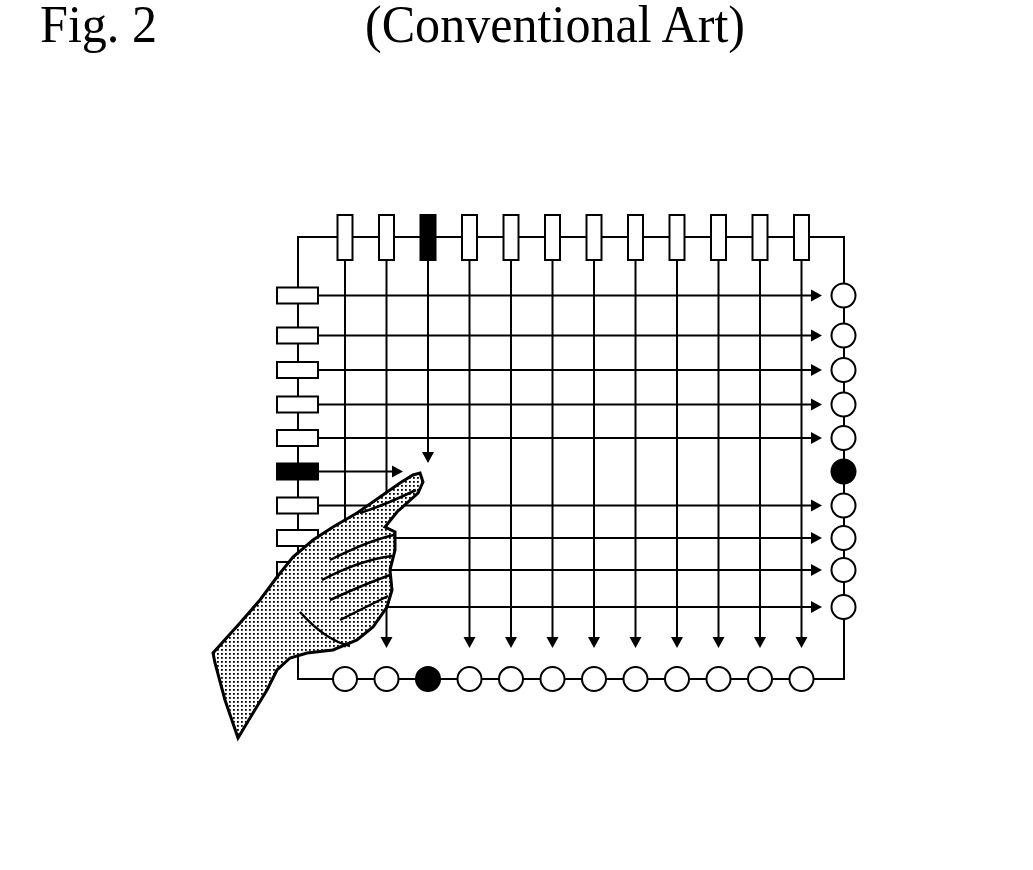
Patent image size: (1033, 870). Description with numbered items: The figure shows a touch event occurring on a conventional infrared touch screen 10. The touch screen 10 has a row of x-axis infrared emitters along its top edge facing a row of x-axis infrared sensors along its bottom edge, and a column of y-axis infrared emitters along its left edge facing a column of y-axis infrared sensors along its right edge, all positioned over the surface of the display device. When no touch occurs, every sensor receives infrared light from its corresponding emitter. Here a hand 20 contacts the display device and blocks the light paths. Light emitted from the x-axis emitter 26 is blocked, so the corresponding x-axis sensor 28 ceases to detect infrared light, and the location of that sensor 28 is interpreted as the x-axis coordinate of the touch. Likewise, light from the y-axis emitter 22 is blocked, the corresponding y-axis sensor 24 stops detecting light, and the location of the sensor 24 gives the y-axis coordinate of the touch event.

The infrared touch screen 10 is at (888, 772).
The hand 20 is at (267, 722).
The y-axis emitter 22 is at (267, 472).
The y-axis sensor 24 is at (858, 468).
The x-axis emitter 26 is at (433, 205).
The x-axis sensor 28 is at (437, 697).